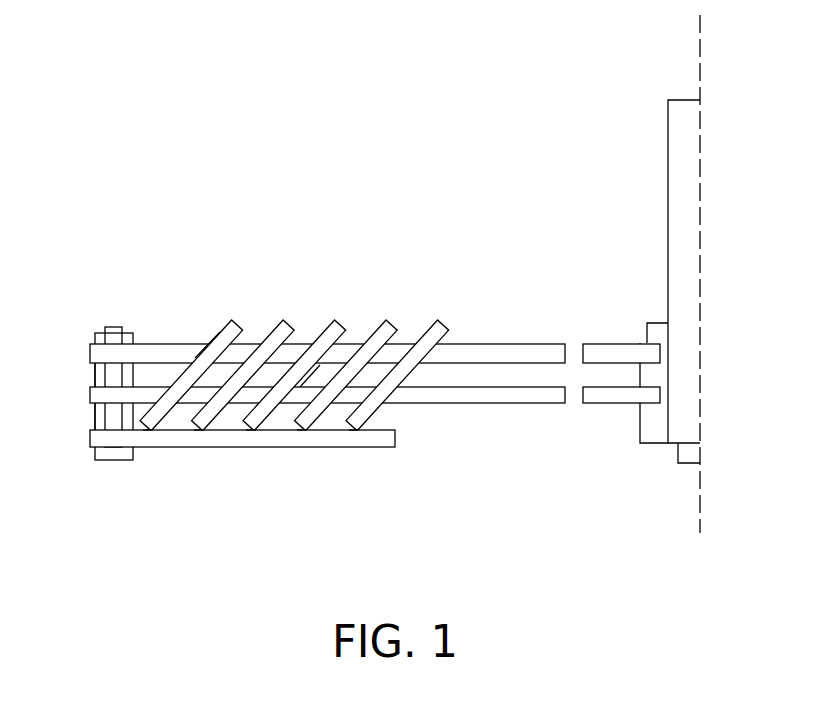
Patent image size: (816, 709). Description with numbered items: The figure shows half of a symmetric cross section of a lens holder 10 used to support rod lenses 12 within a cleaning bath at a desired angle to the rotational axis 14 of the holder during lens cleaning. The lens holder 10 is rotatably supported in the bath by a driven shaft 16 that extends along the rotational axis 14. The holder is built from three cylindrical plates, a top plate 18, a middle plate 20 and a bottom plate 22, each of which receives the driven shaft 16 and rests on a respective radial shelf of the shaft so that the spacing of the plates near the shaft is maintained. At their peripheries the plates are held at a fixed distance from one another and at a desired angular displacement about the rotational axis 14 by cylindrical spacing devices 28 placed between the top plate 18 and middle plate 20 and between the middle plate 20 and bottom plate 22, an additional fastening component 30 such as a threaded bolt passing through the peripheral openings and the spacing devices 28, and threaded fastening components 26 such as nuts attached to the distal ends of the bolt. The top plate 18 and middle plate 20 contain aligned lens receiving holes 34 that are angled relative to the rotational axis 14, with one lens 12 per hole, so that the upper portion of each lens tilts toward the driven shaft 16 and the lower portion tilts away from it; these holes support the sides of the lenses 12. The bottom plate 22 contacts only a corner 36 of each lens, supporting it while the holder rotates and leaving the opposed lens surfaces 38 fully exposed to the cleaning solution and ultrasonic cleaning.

The lens holder 10 is at (188, 120).
The rod lenses 12 is at (235, 330).
The rotational axis 14 is at (700, 49).
The driven shaft 16 is at (682, 452).
The top plate 18 is at (535, 352).
The middle plate 20 is at (486, 395).
The bottom plate 22 is at (387, 436).
The threaded fastening components 26 is at (113, 327).
The spacing devices 28 is at (95, 376).
The additional fastening component 30 is at (105, 453).
The lens receiving holes 34 is at (206, 348).
The corner 36 is at (152, 447).
The lens surfaces 38 is at (435, 330).